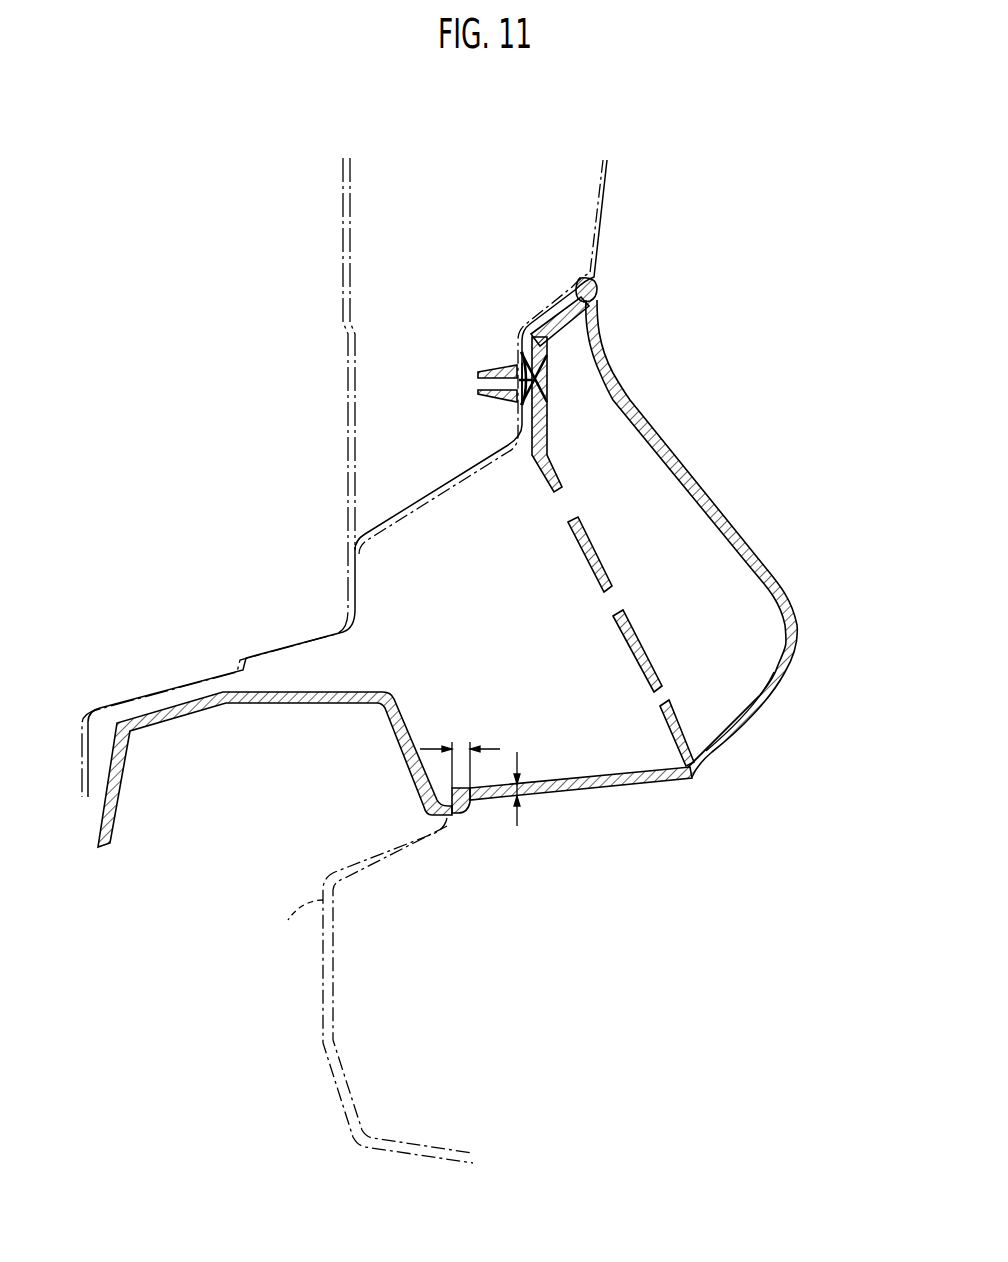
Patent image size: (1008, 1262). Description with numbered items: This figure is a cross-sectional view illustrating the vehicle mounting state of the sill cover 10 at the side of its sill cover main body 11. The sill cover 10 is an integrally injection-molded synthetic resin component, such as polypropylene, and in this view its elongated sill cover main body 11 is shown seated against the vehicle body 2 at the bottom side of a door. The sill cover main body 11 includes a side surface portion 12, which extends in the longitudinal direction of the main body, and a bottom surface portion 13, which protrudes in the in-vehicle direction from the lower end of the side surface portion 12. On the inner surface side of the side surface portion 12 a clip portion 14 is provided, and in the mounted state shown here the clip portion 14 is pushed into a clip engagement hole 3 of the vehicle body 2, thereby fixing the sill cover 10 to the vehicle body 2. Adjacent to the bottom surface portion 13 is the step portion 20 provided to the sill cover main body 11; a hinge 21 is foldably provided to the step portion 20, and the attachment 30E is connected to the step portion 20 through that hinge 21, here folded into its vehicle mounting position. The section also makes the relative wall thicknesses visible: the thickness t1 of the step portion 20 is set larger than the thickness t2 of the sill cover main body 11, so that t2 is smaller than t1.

The vehicle body 2 is at (441, 497).
The clip engagement hole 3 is at (513, 367).
The sill cover 10 is at (667, 600).
The sill cover main body 11 is at (667, 611).
The side surface portion 12 is at (786, 591).
The bottom surface portion 13 is at (646, 793).
The clip portion 14 is at (494, 397).
The step portion 20 is at (478, 800).
The hinge 21 is at (450, 818).
The attachment 30E is at (280, 703).
The thickness of step portion t1 is at (466, 747).
The thickness of sill cover main body t2 is at (520, 776).